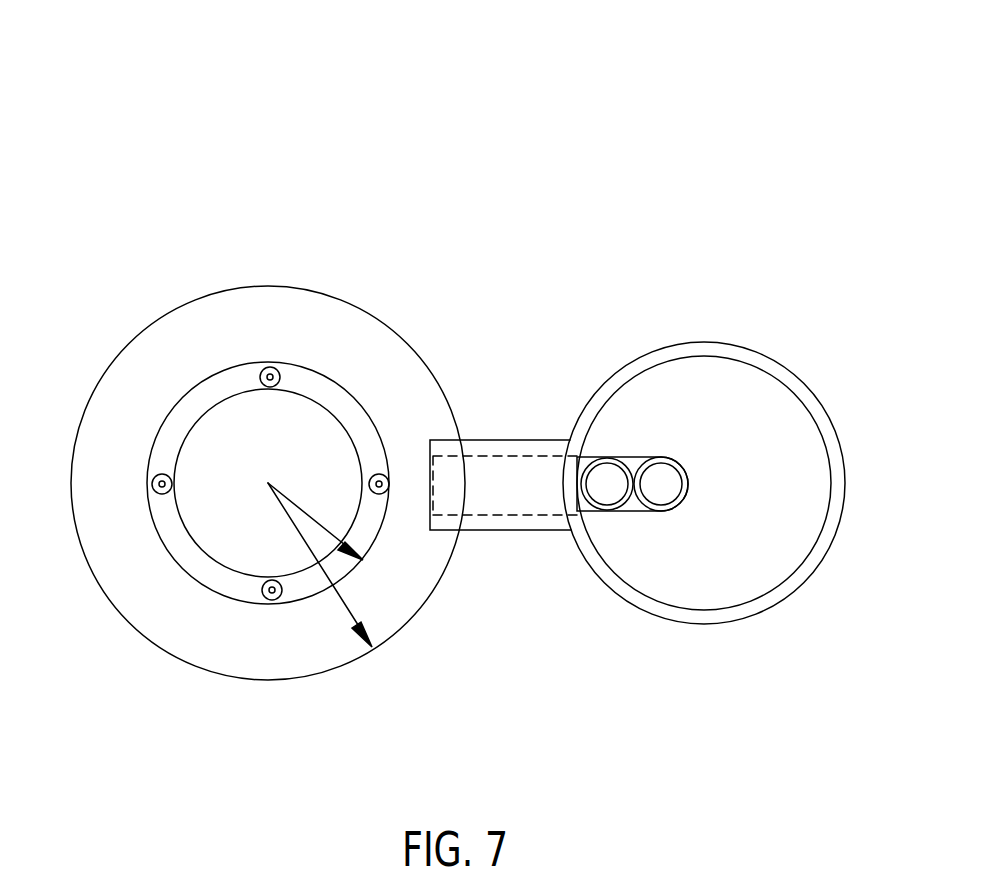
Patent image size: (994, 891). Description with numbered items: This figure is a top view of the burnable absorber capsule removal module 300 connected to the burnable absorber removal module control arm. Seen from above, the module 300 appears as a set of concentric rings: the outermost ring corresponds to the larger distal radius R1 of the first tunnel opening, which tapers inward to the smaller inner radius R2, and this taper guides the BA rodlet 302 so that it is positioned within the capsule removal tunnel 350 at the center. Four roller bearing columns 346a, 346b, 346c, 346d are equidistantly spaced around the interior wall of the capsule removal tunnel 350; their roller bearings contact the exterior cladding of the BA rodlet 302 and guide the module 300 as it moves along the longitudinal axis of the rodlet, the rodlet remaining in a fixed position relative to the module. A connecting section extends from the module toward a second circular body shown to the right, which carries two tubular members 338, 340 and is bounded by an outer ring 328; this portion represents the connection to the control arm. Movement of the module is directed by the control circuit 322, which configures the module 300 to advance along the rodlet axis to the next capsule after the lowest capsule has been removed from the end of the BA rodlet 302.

The burnable absorber capsule removal module 300 is at (645, 107).
The BA rodlet 302 is at (227, 535).
The control circuit 322 is at (120, 548).
The second flange 328 is at (813, 557).
The first tube 338 is at (662, 490).
The second tube 340 is at (605, 490).
The roller bearing column 346a is at (161, 474).
The roller bearing column 346b is at (270, 367).
The roller bearing column 346c is at (381, 474).
The roller bearing column 346d is at (272, 600).
The capsule removal tunnel 350 is at (173, 530).
The larger distal radius R1 is at (347, 608).
The smaller inner radius R2 is at (295, 505).